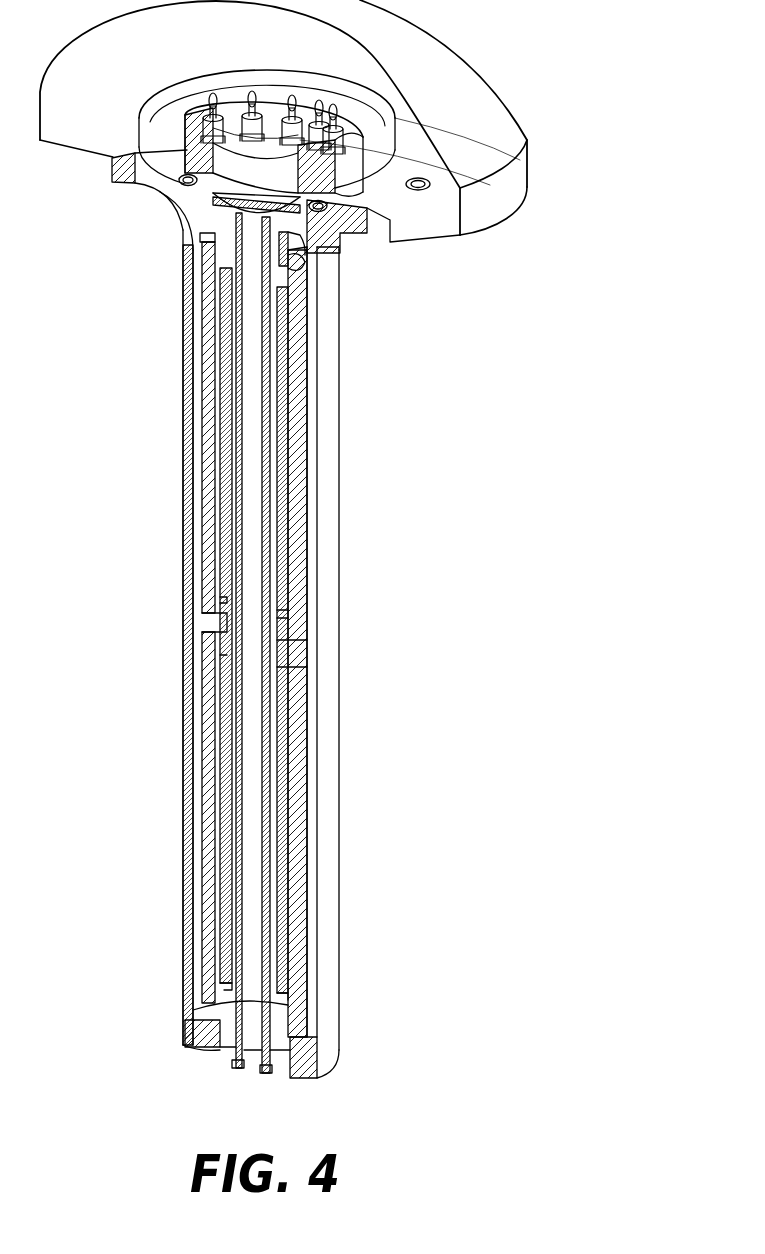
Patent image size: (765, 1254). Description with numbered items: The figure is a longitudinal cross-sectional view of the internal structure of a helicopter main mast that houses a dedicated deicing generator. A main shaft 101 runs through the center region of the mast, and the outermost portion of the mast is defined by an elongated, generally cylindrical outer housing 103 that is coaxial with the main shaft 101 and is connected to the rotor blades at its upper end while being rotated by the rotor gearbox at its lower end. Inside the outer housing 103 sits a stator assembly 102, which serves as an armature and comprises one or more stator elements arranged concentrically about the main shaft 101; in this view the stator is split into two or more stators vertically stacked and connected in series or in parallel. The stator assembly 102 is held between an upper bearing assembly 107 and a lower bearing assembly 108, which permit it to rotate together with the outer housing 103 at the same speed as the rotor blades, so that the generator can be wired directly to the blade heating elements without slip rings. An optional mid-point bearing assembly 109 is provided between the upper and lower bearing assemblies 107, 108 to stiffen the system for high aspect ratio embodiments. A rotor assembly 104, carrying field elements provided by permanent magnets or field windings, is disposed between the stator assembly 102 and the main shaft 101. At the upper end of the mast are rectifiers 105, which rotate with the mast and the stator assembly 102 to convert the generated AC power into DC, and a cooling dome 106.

The main shaft 101 is at (255, 735).
The stator assembly 102 is at (300, 457).
The outer housing 103 is at (330, 878).
The rotor assembly 104 is at (280, 544).
The rectifiers 105 is at (207, 155).
The cooling dome 106 is at (460, 68).
The upper bearing assembly 107 is at (290, 262).
The lower bearing assembly 108 is at (317, 1060).
The mid-point bearing assembly 109 is at (215, 621).